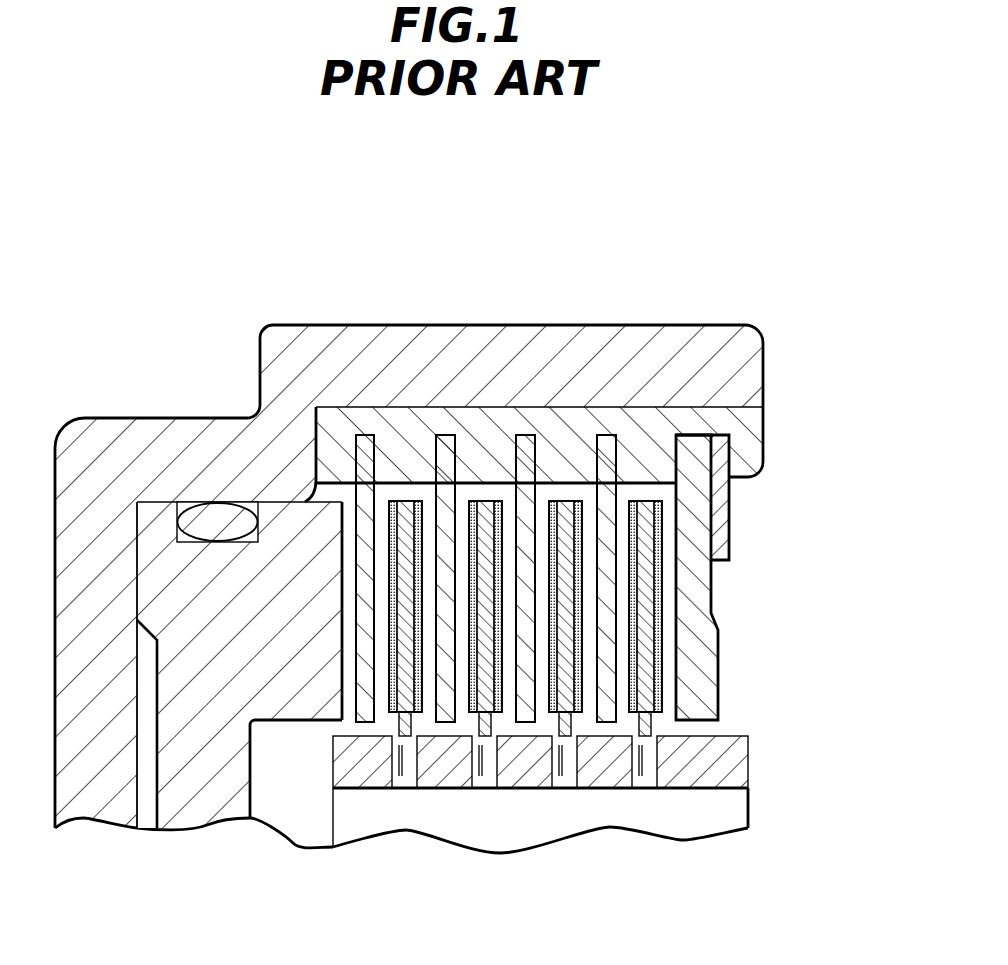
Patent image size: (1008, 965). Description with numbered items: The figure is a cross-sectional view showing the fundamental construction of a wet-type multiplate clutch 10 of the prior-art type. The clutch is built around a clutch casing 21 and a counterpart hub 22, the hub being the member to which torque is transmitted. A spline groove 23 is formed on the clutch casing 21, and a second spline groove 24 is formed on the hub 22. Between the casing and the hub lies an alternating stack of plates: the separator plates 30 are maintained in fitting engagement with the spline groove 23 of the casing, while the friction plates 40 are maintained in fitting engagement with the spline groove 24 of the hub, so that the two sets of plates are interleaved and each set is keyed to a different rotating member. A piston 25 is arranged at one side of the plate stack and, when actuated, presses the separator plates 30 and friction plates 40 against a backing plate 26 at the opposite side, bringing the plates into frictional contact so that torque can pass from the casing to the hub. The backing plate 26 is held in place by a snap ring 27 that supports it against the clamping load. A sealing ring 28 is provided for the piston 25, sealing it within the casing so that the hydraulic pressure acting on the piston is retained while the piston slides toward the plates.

The wet-type multiplate clutch 10 is at (779, 248).
The clutch casing 21 is at (287, 357).
The counterpart hub 22 is at (703, 810).
The spline groove 23 is at (747, 428).
The spline groove 24 is at (722, 765).
The piston 25 is at (155, 527).
The backing plate 26 is at (698, 669).
The snap ring 27 is at (720, 540).
The sealing ring 28 is at (218, 524).
The separator plates 30 is at (365, 445).
The friction plates 40 is at (405, 515).